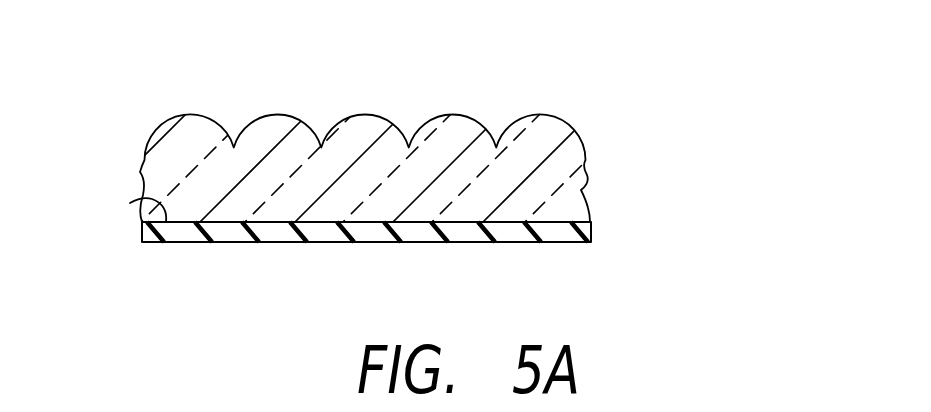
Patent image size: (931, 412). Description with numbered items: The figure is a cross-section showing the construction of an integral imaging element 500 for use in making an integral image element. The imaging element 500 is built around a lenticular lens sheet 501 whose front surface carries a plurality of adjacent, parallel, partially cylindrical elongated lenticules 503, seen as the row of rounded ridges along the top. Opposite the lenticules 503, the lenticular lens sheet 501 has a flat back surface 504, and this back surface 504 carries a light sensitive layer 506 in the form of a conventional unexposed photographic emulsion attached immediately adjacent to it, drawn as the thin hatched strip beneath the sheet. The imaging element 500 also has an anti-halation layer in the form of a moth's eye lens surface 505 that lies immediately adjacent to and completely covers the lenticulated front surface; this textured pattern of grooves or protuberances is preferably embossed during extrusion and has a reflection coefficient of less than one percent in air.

The integral imaging element 500 is at (409, 168).
The lenticular lens sheet 501 is at (369, 132).
The lenticules 503 is at (262, 117).
The back surface 504 is at (130, 203).
The moth's eye lens surface 505 is at (363, 117).
The light sensitive layer 506 is at (553, 230).